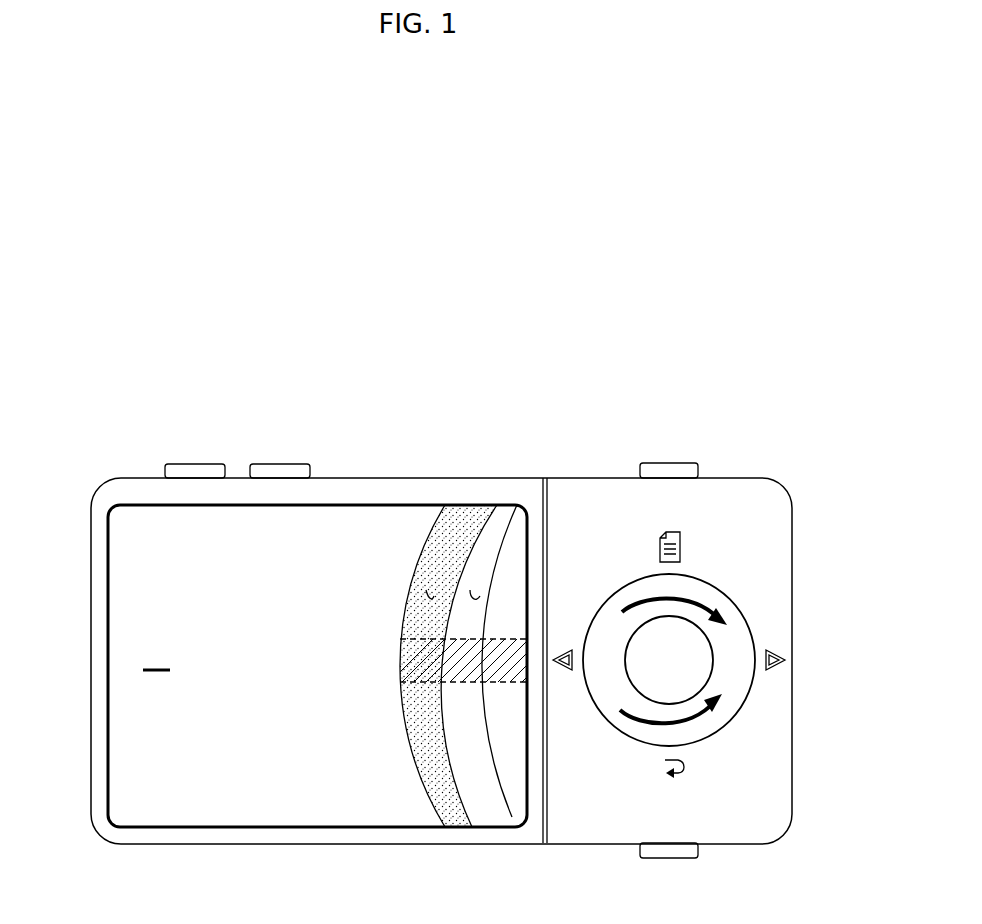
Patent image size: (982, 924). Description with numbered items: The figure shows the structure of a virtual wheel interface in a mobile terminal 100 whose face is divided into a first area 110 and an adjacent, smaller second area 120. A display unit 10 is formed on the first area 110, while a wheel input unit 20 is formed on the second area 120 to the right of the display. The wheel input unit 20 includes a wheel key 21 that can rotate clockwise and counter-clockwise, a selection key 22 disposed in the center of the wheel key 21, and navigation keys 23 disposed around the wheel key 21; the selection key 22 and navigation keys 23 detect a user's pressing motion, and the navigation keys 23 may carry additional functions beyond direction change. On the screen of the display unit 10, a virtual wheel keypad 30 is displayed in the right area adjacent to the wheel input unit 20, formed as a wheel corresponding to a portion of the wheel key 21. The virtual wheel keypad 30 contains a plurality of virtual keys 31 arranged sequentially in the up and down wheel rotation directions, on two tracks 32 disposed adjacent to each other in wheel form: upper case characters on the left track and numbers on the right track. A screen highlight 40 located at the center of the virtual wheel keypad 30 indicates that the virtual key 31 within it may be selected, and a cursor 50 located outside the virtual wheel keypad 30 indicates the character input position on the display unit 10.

The mobile terminal 100 is at (686, 382).
The first area 110 is at (494, 487).
The second area 120 is at (752, 486).
The display unit 10 is at (150, 502).
The wheel input unit 20 is at (708, 672).
The wheel key 21 is at (637, 733).
The selection key 22 is at (700, 641).
The navigation keys 23 is at (558, 650).
The virtual wheel keypad 30 is at (422, 795).
The virtual keys 31 is at (476, 598).
The tracks 32 is at (470, 826).
The screen highlight 40 is at (421, 644).
The cursor 50 is at (143, 668).